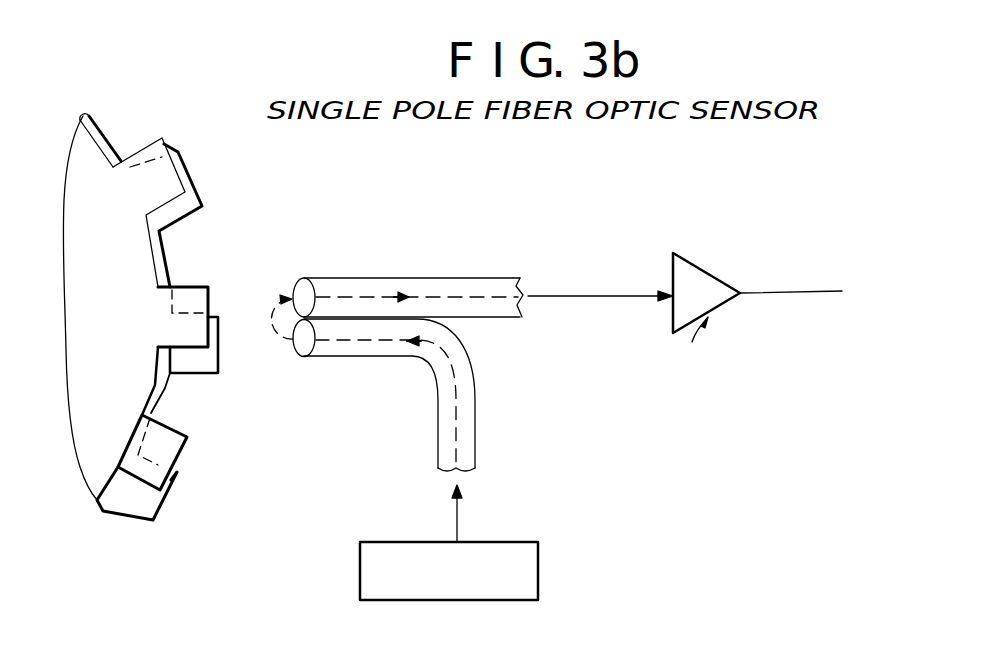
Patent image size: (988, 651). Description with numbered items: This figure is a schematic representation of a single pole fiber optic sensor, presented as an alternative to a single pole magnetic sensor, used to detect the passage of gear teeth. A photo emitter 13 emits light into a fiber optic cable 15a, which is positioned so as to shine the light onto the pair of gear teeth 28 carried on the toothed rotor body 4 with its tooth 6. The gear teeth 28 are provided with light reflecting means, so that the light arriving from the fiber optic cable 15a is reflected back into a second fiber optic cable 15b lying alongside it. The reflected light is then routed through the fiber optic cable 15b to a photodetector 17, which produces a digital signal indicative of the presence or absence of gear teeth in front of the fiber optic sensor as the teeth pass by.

The rotor body 4 is at (87, 148).
The rotor tooth 6 is at (113, 150).
The gear teeth 28 is at (153, 192).
The fiber optic cable 15a is at (477, 392).
The fiber optic cable 15b is at (521, 318).
The photodetector 17 is at (708, 278).
The photo emitter 13 is at (538, 553).